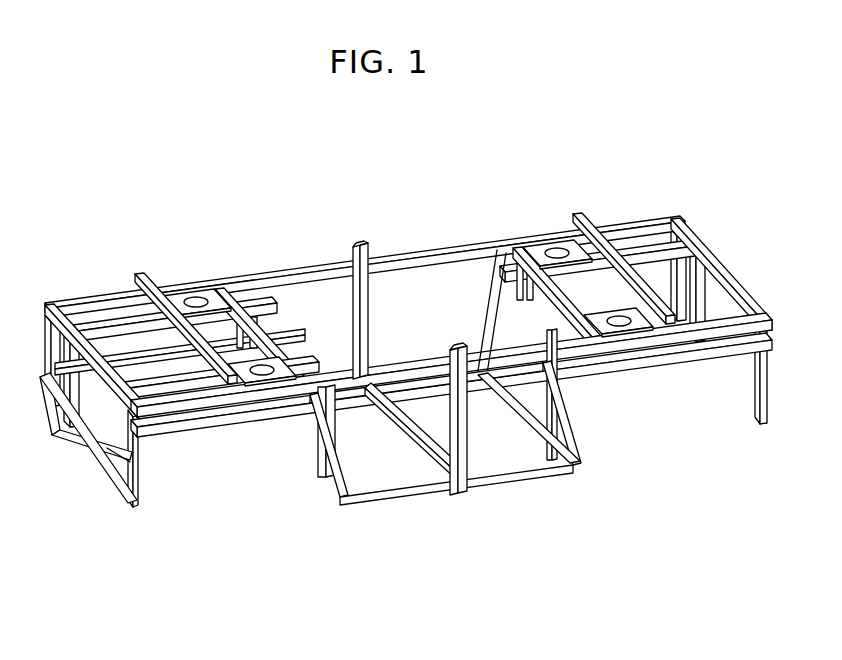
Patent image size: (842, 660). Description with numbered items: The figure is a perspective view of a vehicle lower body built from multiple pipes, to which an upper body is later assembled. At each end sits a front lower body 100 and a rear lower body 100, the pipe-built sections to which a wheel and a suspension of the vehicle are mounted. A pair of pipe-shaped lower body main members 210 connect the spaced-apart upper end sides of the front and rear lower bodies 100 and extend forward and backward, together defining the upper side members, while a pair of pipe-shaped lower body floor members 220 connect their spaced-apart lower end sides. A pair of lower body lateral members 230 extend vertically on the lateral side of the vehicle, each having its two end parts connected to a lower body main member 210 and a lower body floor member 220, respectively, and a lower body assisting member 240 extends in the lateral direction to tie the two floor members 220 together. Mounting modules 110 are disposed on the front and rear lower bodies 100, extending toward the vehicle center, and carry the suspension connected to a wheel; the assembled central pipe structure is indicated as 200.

The front lower body / rear lower body 100 is at (406, 368).
The mounting module 110 is at (212, 297).
The sub-frame 200 is at (448, 385).
The lower body main member 210 is at (440, 245).
The lower body floor member 220 is at (345, 392).
The lower body lateral member 230 is at (362, 303).
The lower body assisting member 240 is at (405, 425).